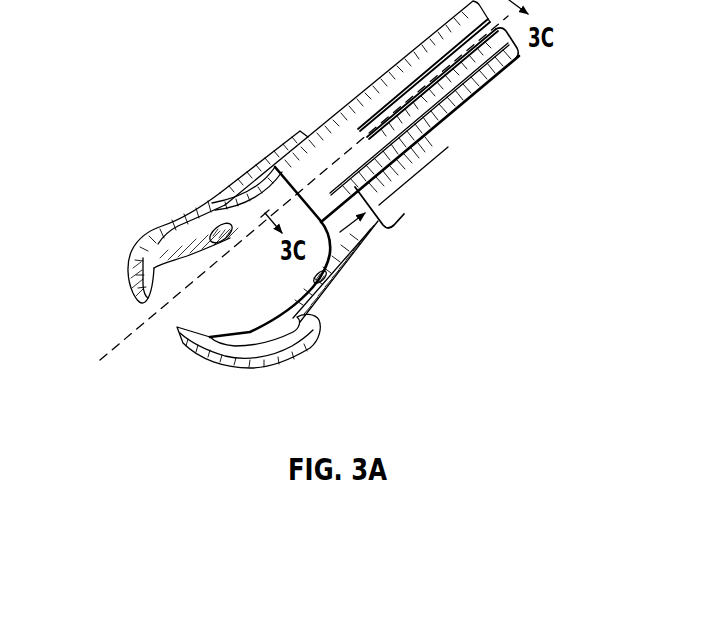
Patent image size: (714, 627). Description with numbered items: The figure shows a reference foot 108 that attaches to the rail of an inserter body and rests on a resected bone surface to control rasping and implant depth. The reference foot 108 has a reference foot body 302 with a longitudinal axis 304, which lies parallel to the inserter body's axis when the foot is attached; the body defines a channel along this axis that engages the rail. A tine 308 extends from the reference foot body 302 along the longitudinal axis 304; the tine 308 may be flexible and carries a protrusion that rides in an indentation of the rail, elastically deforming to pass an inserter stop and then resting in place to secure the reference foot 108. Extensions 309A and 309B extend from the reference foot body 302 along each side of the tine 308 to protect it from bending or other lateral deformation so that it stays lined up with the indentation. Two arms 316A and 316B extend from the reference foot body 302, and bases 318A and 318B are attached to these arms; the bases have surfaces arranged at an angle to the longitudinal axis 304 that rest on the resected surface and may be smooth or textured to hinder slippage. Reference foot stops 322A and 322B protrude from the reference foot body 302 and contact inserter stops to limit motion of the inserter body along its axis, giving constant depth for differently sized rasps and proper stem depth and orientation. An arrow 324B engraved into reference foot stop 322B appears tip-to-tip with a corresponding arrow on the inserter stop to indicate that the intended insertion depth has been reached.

The reference foot 108 is at (241, 47).
The reference foot body 302 is at (317, 163).
The longitudinal axis 304 is at (113, 348).
The tine 308 is at (407, 78).
The extension 309A is at (428, 42).
The extension 309B is at (483, 82).
The arm 316A is at (188, 223).
The arm 316B is at (325, 295).
The base 318A is at (130, 283).
The base 318B is at (200, 357).
The reference foot stop 322A is at (270, 157).
The reference foot stop 322B is at (386, 218).
The arrow 324B is at (366, 232).